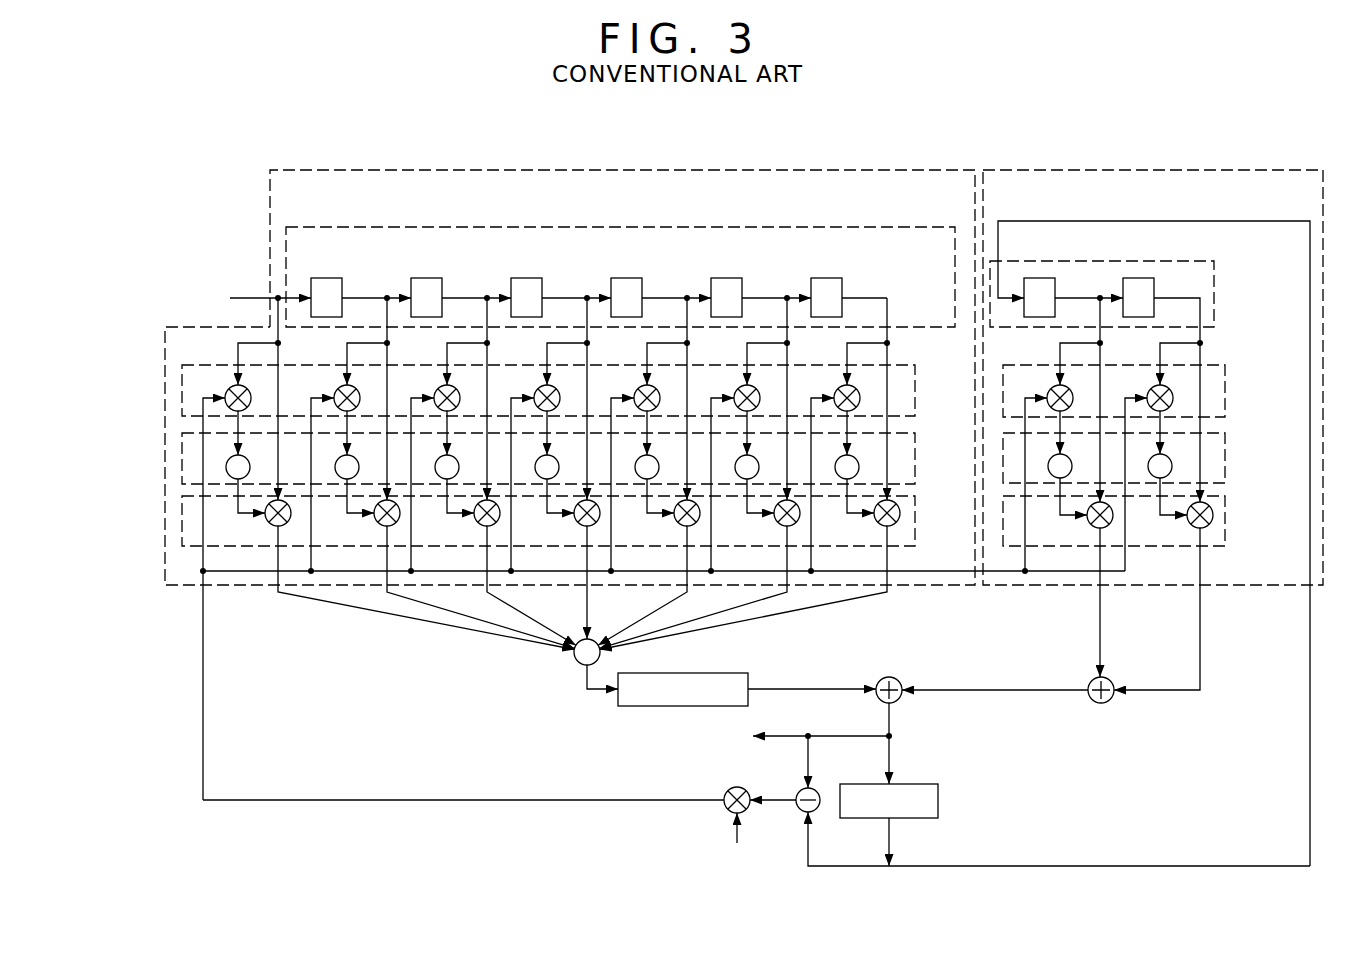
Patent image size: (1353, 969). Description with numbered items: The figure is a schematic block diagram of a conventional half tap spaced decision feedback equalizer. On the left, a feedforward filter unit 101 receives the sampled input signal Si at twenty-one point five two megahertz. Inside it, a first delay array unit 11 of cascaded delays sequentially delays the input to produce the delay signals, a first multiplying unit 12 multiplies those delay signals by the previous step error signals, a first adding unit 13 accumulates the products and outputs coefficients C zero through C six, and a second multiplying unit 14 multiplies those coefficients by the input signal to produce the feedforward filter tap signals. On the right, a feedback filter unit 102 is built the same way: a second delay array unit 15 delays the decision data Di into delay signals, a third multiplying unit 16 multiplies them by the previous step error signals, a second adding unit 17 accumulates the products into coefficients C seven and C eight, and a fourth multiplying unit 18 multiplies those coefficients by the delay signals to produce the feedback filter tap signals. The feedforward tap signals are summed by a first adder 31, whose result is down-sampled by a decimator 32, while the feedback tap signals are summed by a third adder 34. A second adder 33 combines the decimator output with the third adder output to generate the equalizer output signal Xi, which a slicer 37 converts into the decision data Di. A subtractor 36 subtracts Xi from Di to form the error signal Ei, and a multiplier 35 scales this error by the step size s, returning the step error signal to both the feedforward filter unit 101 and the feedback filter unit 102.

The feedforward filter unit 101 is at (665, 170).
The feedback filter unit 102 is at (1100, 170).
The first delay array unit 11 is at (848, 226).
The first multiplying unit 12 is at (915, 391).
The first adding unit 13 is at (915, 458).
The second multiplying unit 14 is at (915, 520).
The second delay array unit 15 is at (1218, 292).
The third multiplying unit 16 is at (1225, 389).
The second adding unit 17 is at (1225, 457).
The fourth multiplying unit 18 is at (1225, 520).
The first adder 31 is at (578, 664).
The decimator 32 is at (648, 708).
The second adder 33 is at (895, 677).
The third adder 34 is at (1110, 703).
The multiplier 35 is at (725, 809).
The subtractor 36 is at (800, 814).
The slicer 37 is at (940, 800).